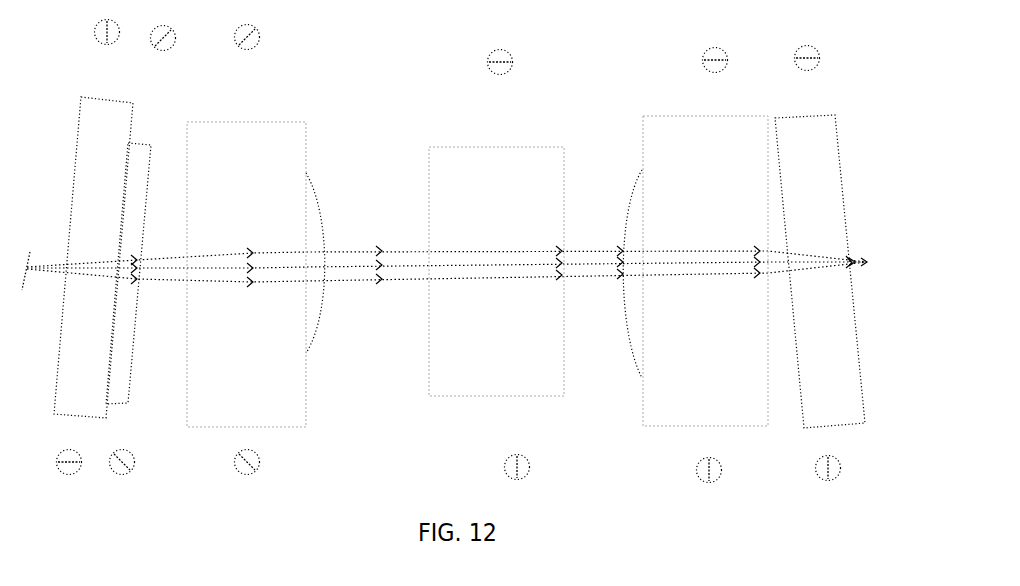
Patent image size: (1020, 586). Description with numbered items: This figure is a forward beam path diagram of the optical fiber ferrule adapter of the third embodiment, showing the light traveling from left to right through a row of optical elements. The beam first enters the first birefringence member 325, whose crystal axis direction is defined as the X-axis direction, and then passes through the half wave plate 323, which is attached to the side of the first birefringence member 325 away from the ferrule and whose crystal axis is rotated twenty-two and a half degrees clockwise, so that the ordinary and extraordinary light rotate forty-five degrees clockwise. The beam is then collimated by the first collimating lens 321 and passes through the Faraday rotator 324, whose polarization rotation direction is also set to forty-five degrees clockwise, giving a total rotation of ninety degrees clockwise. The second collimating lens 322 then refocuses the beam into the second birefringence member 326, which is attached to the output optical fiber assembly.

The first collimating lens 321 is at (247, 122).
The second collimating lens 322 is at (642, 143).
The half wave plate 323 is at (135, 143).
The Faraday rotator 324 is at (510, 146).
The first birefringence member 325 is at (100, 98).
The second birefringence member 326 is at (838, 140).